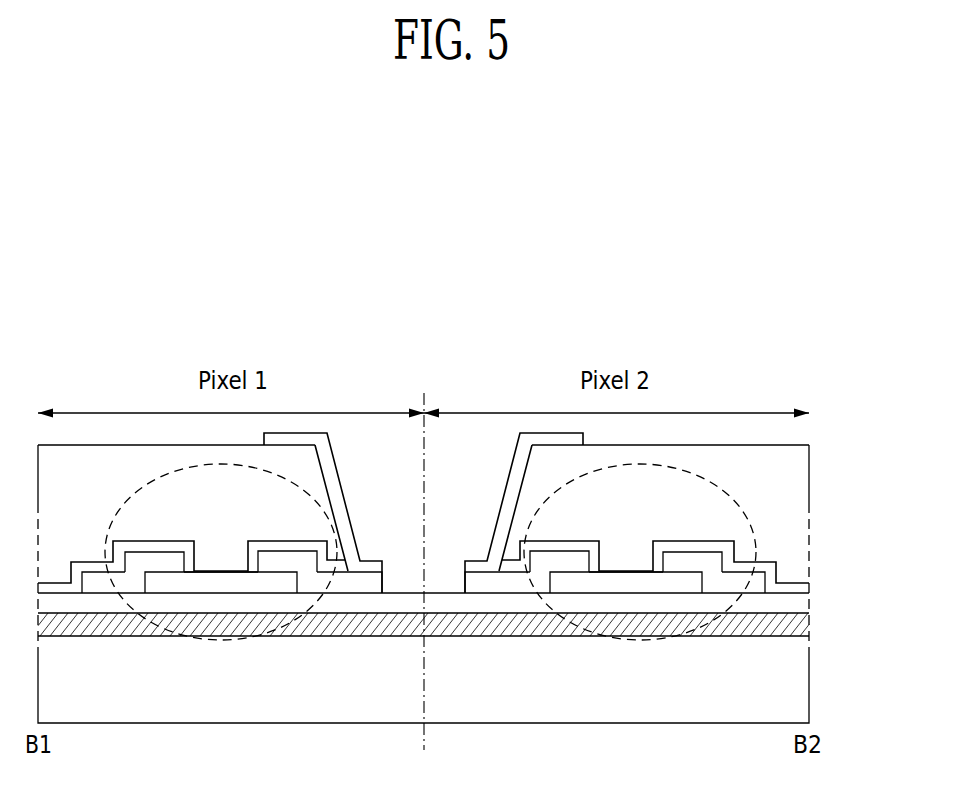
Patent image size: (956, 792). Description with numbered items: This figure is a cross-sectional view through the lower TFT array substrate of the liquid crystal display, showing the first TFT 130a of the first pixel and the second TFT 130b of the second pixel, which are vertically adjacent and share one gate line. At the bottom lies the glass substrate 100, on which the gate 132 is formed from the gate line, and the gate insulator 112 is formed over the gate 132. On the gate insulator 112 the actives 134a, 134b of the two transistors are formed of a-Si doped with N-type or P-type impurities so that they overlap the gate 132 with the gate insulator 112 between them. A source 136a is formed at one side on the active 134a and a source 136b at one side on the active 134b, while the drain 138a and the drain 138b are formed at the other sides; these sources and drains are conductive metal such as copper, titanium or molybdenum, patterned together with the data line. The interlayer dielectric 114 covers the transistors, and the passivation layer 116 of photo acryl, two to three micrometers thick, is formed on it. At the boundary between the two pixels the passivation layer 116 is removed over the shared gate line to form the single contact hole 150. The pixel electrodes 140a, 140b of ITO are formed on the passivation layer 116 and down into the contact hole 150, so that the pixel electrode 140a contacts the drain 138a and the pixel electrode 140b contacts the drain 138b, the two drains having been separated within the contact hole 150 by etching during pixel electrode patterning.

The glass substrate 100 is at (793, 676).
The gate insulator 112 is at (793, 606).
The interlayer dielectric 114 is at (778, 571).
The passivation layer 116 is at (793, 531).
The first TFT 130a is at (122, 512).
The second TFT 130b is at (733, 503).
The gate 132 is at (146, 637).
The active 134a is at (224, 571).
The active 134b is at (630, 571).
The source 136a is at (159, 541).
The source 136b is at (700, 541).
The drain 138a is at (289, 541).
The drain 138b is at (582, 541).
The pixel electrode 140a is at (343, 511).
The pixel electrode 140b is at (505, 512).
The contact hole 150 is at (452, 461).